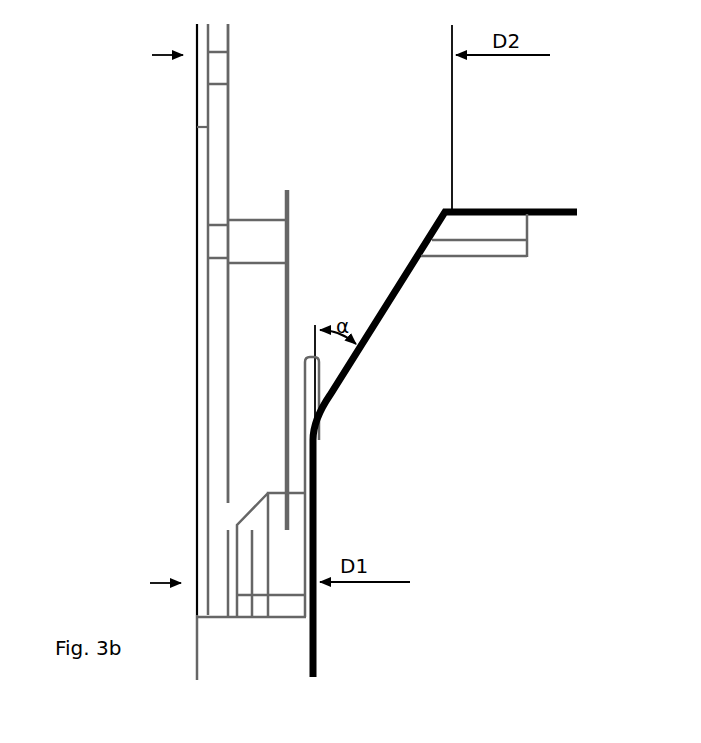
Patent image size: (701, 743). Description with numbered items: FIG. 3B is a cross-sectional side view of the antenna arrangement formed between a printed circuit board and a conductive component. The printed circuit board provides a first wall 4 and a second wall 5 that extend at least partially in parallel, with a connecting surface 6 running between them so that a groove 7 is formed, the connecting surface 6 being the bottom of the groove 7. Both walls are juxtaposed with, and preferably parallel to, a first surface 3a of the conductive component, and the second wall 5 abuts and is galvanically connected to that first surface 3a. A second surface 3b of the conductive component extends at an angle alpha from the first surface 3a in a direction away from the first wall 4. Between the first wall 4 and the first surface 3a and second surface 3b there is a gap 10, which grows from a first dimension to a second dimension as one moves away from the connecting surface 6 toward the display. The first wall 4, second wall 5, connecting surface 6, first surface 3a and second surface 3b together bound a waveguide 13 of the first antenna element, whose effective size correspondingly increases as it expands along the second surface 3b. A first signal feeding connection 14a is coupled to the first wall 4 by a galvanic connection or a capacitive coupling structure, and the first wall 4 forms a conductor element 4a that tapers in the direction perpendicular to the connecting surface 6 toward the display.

The first wall 4 is at (148, 352).
The conductor element 4a is at (203, 186).
The first signal feeding connection 14a is at (250, 240).
The waveguide 13 is at (331, 242).
The gap 10 is at (305, 320).
The second wall 5 is at (309, 413).
The groove 7 is at (258, 470).
The connecting surface 6 is at (248, 621).
The first surface 3a is at (314, 612).
The second surface 3b is at (399, 305).